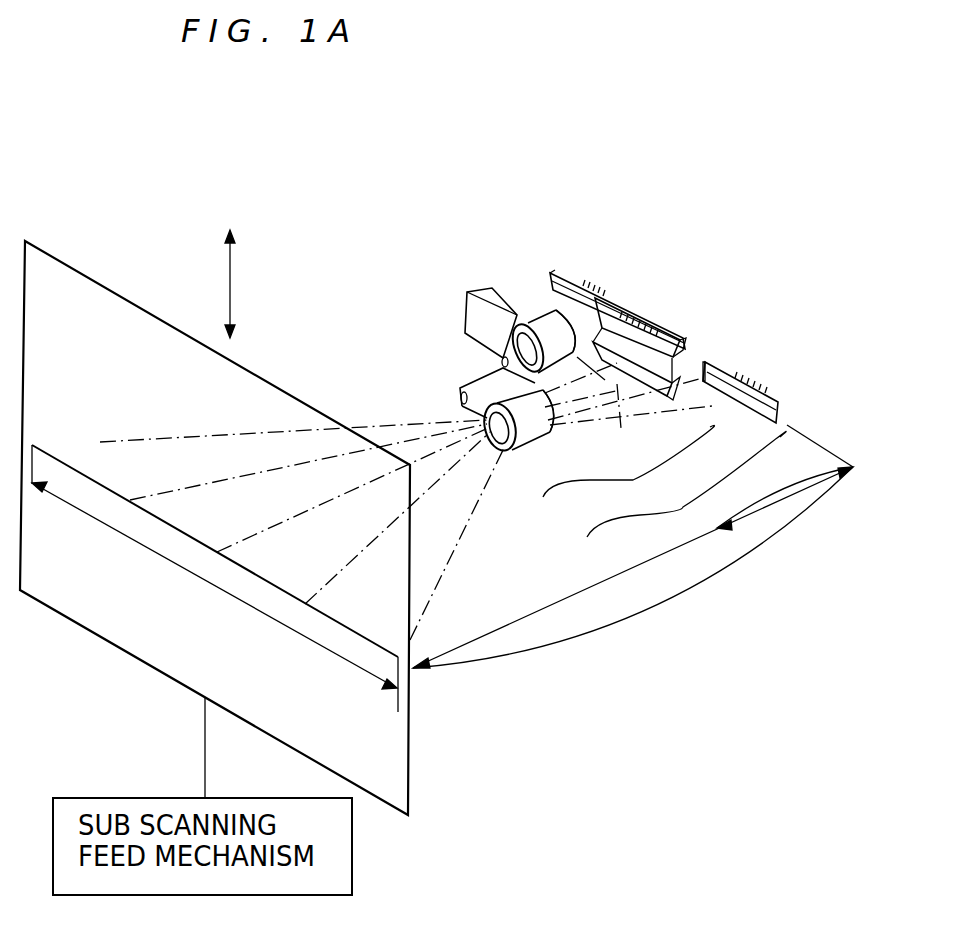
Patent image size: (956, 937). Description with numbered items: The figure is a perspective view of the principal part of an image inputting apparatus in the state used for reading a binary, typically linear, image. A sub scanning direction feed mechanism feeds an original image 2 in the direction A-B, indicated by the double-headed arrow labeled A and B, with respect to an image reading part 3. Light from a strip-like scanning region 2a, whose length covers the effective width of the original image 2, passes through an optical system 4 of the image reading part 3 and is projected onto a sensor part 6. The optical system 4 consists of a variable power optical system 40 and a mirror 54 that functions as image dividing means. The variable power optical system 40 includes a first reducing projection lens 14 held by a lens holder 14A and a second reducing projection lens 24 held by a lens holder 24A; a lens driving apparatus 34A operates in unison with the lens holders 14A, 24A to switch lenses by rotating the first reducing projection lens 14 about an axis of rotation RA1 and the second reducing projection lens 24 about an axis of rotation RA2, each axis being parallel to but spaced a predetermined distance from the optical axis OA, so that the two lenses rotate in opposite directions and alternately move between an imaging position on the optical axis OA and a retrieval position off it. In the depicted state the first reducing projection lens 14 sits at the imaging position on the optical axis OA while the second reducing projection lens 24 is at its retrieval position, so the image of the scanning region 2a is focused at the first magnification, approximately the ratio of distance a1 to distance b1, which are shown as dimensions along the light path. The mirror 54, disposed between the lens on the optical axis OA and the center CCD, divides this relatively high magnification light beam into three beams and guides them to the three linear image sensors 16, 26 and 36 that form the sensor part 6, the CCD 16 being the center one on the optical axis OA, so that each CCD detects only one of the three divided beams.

The original image 2 is at (413, 718).
The strip-like scanning region 2a is at (75, 468).
The image reading part 3 is at (712, 528).
The optical system 4 is at (629, 469).
The sensor part 6 is at (714, 323).
The first reducing projection lens 14 is at (503, 447).
The lens holder 14A is at (530, 440).
The linear image sensor (CCD) 16 is at (668, 338).
The second reducing projection lens 24 is at (517, 330).
The lens holder 24A is at (550, 313).
The linear image sensor (CCD) 26 is at (563, 277).
The lens driving apparatus 34A is at (480, 290).
The linear image sensor (CCD) 36 is at (720, 363).
The variable power optical system 40 is at (460, 362).
The mirror 54 is at (673, 400).
The axis of rotation RA1 is at (450, 403).
The axis of rotation RA2 is at (497, 363).
The optical axis OA is at (413, 420).
The feed direction A is at (229, 271).
The feed direction B is at (245, 347).
The distance a1 is at (633, 567).
The distance b1 is at (785, 500).